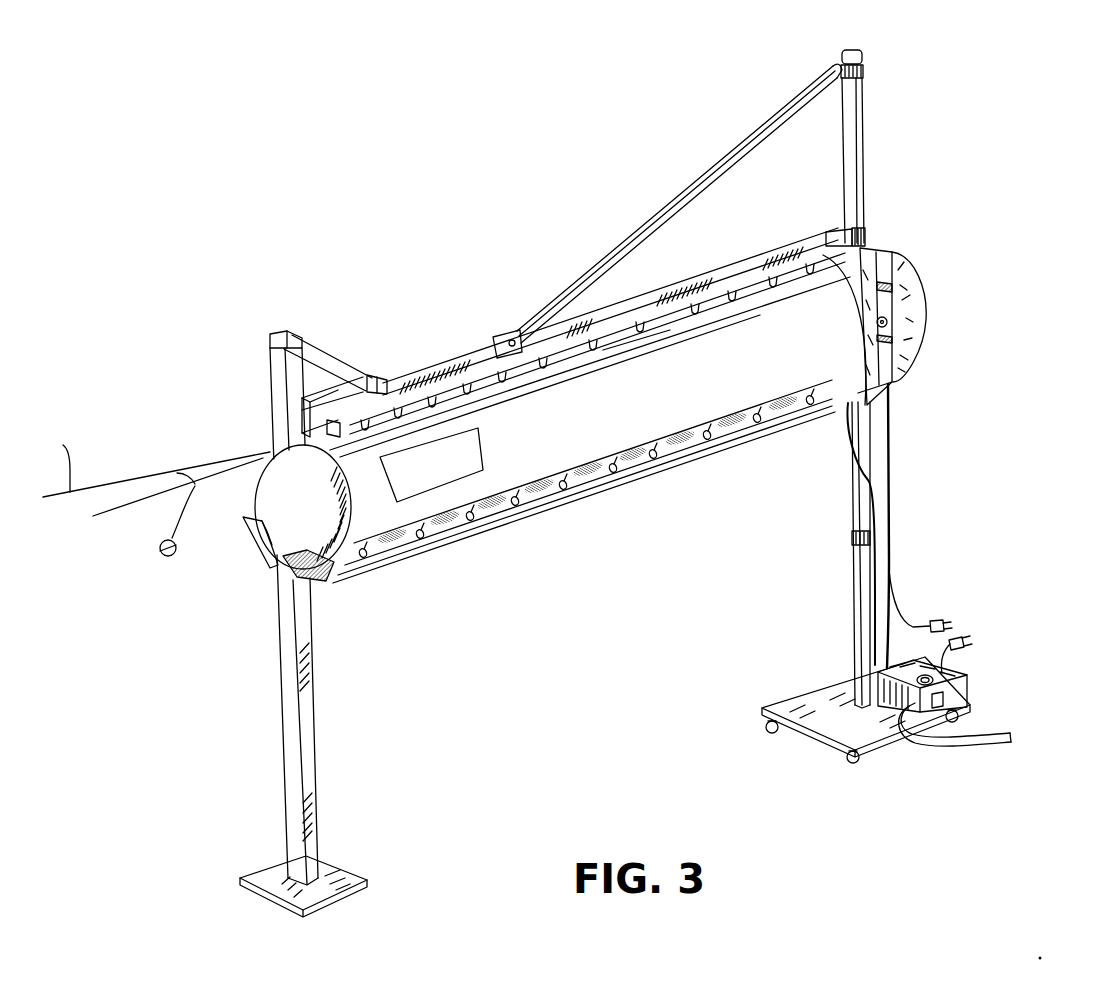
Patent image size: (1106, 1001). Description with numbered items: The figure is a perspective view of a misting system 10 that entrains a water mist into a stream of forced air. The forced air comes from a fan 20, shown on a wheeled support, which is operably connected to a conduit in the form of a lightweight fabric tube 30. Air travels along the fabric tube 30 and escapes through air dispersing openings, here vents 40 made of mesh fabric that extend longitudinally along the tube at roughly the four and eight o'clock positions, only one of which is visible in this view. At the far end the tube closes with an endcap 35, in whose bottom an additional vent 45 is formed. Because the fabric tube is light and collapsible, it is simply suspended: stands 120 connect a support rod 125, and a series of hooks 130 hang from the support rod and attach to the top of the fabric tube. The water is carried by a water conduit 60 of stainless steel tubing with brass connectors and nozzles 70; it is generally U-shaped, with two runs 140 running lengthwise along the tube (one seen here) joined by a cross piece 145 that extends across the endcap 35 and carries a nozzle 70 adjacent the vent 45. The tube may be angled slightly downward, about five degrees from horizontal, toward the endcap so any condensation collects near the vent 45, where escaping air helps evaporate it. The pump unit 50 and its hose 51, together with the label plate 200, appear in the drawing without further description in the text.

The misting system 10 is at (372, 228).
The fan 20 is at (930, 325).
The fabric tube 30 is at (557, 424).
The endcap 35 is at (309, 499).
The vents 40 is at (470, 528).
The vent 45 is at (277, 571).
The pump unit 50 is at (957, 692).
The supply hose 51 is at (1012, 736).
The water conduit 60 is at (332, 575).
The nozzle 70 is at (655, 455).
The stands 120 is at (268, 362).
The support rod 125 is at (457, 357).
The hooks 130 is at (773, 280).
The runs 140 is at (537, 525).
The cross piece 145 is at (262, 537).
The label plate 200 is at (487, 453).